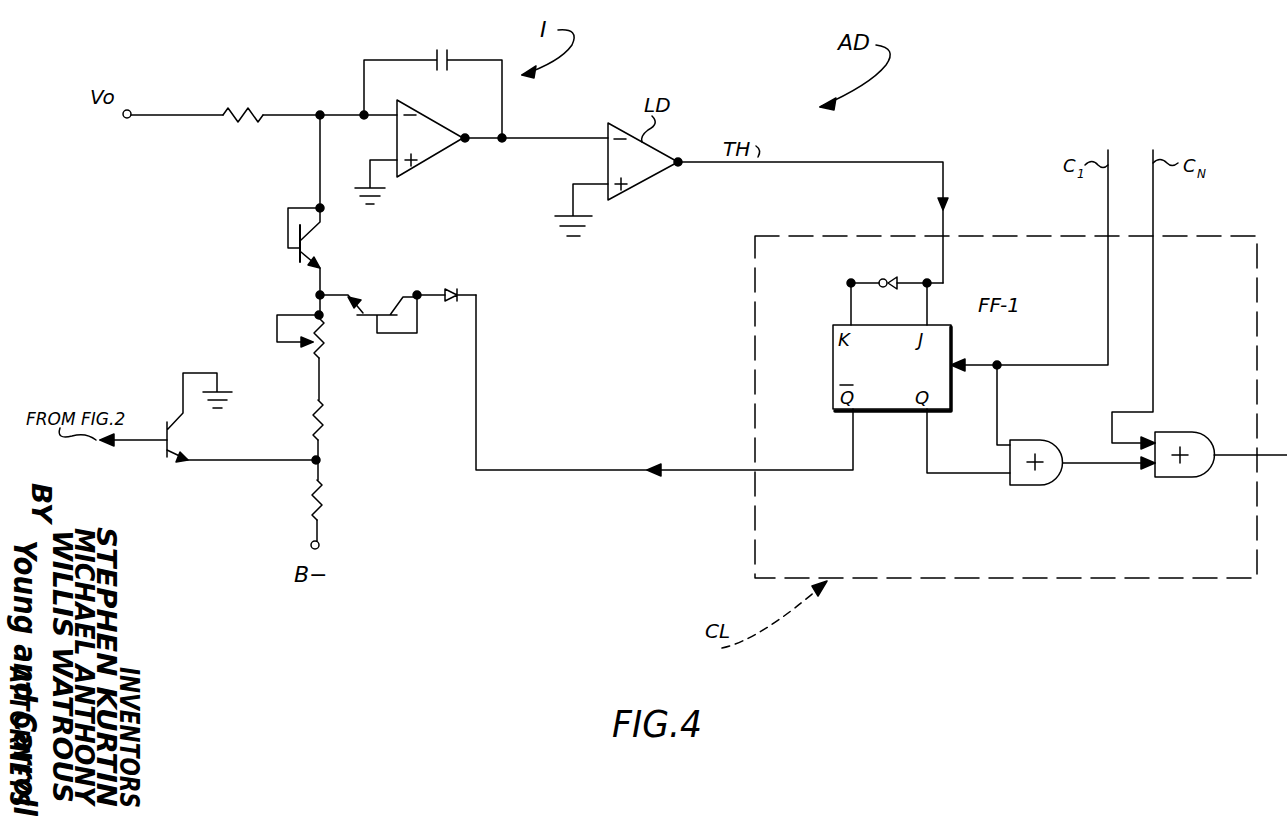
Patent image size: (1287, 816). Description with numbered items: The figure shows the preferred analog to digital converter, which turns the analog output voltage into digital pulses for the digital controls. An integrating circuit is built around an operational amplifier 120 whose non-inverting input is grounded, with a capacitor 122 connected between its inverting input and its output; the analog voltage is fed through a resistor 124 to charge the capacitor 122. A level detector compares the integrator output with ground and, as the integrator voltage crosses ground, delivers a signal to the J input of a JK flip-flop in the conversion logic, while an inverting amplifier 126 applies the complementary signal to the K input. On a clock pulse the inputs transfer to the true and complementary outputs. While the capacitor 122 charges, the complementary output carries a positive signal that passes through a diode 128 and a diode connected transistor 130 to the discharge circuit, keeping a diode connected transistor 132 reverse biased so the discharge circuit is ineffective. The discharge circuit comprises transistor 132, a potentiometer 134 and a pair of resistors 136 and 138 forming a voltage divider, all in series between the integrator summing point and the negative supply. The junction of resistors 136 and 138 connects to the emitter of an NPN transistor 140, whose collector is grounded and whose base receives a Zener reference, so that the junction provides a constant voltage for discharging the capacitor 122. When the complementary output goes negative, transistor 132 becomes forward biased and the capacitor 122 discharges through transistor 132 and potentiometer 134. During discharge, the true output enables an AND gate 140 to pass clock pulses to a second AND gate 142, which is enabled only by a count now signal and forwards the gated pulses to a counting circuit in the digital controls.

The operational amplifier 120 is at (452, 134).
The capacitor 122 is at (442, 50).
The resistor 124 is at (255, 108).
The inverting amplifier 126 is at (890, 277).
The diode 128 is at (450, 292).
The diode connected transistor 130 is at (402, 276).
The diode connected transistor 132 is at (320, 244).
The potentiometer 134 is at (324, 352).
The resistor 136 is at (322, 426).
The resistor 138 is at (322, 494).
The NPN transistor / AND gate 140 is at (1056, 444).
The AND gate 142 is at (1212, 427).